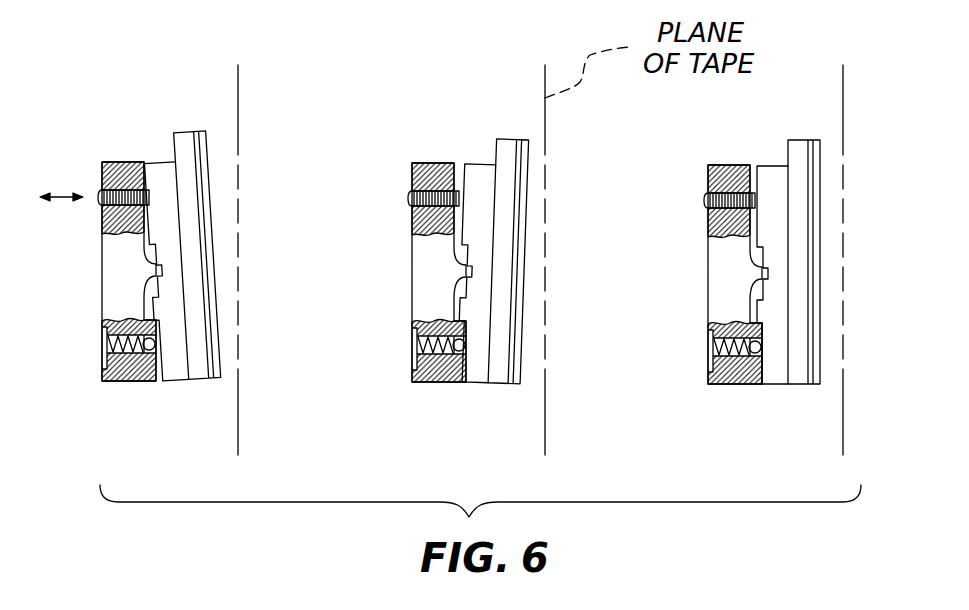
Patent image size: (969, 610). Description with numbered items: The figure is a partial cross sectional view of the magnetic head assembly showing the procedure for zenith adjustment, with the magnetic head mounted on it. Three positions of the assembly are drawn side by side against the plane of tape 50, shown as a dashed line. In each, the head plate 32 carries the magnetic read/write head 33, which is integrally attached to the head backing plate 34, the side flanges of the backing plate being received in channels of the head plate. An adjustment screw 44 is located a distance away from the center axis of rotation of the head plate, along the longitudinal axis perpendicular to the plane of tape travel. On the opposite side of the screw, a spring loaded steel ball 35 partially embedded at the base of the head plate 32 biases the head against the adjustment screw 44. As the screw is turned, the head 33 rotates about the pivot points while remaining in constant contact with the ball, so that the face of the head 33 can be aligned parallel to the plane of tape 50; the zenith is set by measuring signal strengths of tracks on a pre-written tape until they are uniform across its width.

The head plate 32 is at (407, 272).
The magnetic read/write head 33 is at (508, 234).
The head backing plate 34 is at (477, 308).
The spring-loaded ball 35 is at (132, 385).
The adjustment screw 44 is at (123, 153).
The plane of tape 50 is at (238, 98).